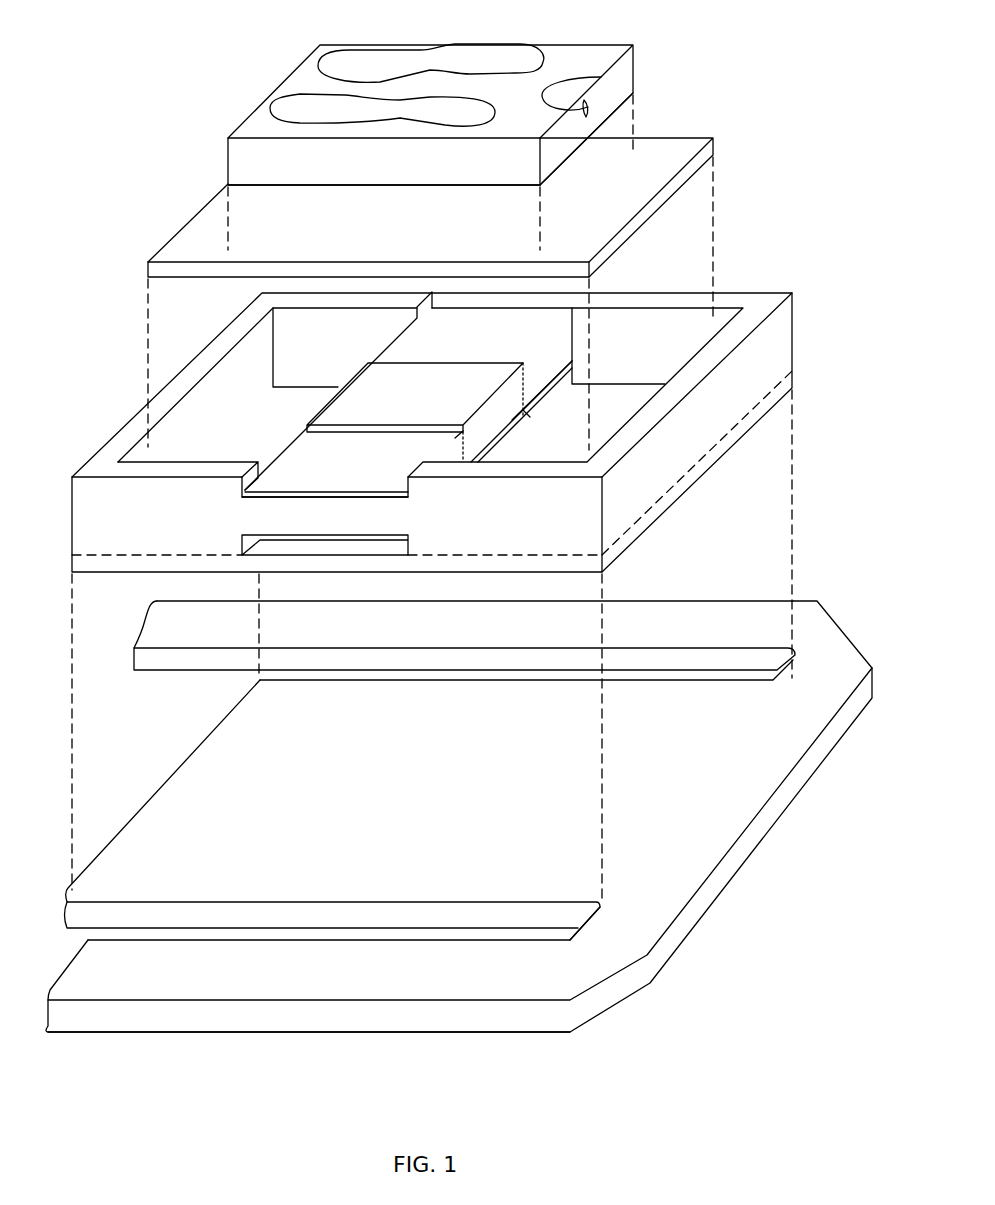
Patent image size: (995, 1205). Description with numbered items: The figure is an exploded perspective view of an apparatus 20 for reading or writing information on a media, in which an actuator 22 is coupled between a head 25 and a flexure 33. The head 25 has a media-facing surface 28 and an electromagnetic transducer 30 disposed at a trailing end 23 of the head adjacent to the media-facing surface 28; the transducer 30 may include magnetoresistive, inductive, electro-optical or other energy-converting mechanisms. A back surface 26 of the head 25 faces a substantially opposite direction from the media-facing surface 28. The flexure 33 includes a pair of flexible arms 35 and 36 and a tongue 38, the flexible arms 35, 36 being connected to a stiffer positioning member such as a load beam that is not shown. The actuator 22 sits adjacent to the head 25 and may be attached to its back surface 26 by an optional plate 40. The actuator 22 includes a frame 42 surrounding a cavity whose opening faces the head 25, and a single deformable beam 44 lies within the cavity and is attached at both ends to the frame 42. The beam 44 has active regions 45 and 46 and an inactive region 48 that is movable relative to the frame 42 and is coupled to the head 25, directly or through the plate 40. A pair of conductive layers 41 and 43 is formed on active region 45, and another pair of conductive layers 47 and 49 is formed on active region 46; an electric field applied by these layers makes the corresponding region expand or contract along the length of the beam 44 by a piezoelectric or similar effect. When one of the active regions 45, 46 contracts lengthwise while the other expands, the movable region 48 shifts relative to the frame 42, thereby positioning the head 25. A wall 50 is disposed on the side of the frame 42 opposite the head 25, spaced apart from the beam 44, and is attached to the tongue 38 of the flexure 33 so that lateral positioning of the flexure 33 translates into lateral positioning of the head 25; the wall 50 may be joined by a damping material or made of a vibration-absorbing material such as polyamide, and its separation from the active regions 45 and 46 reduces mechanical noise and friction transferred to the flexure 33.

The apparatus 20 is at (96, 74).
The actuator 22 is at (477, 425).
The trailing end 23 is at (572, 142).
The head 25 is at (480, 130).
The back surface 26 is at (369, 196).
The media-facing surface 28 is at (302, 75).
The electromagnetic transducer 30 is at (596, 100).
The flexure 33 is at (459, 846).
The flexible arm 35 is at (257, 1032).
The flexible arm 36 is at (697, 600).
The tongue 38 is at (166, 780).
The plate 40 is at (196, 213).
The conductive layer 41 is at (358, 455).
The frame 42 is at (118, 445).
The conductive layer 43 is at (383, 537).
The deformable beam 44 is at (535, 425).
The active region 45 is at (460, 453).
The active region 46 is at (556, 358).
The conductive layer 47 is at (503, 330).
The inactive region 48 is at (430, 378).
The conductive layer 49 is at (540, 395).
The wall 50 is at (287, 410).